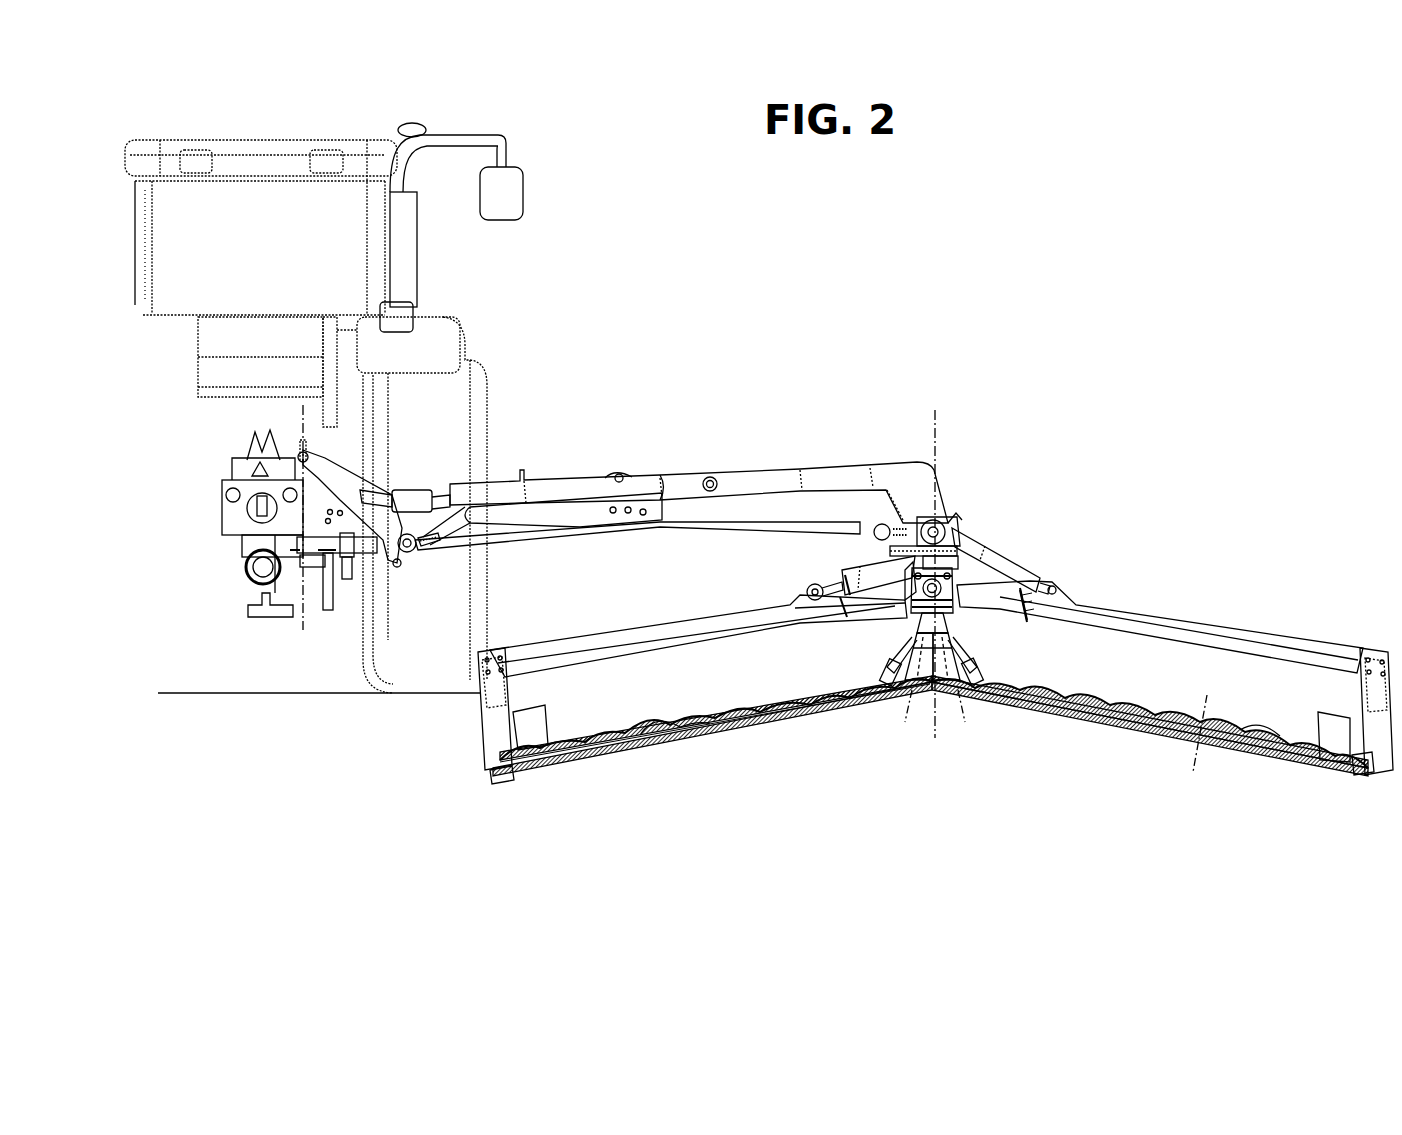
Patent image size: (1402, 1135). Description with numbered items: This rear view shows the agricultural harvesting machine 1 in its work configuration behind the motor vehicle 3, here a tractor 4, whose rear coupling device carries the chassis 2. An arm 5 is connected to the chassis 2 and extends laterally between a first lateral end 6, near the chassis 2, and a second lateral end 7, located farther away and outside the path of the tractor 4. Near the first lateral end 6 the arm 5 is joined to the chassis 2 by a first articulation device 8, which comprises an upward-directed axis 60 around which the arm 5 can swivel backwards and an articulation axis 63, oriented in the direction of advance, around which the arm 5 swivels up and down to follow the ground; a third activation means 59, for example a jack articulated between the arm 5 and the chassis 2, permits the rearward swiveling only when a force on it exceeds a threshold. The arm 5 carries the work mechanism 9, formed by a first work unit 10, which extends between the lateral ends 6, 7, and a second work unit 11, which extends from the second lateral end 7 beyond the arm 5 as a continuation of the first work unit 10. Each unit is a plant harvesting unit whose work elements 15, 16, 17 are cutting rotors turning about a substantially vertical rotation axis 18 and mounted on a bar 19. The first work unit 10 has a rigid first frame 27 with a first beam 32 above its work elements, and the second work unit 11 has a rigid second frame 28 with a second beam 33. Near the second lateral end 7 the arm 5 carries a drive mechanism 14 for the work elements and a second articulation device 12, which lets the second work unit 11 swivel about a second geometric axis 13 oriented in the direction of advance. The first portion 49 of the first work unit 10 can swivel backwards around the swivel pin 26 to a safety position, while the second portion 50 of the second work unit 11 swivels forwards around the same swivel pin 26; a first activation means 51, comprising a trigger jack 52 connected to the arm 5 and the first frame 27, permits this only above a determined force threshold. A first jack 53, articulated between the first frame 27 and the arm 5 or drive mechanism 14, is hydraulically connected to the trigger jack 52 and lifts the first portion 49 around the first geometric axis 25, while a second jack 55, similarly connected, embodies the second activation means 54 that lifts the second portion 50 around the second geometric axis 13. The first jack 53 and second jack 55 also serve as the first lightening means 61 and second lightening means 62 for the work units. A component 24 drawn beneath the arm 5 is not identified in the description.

The machine 1 is at (452, 836).
The chassis 2 is at (250, 518).
The motor vehicle 3 is at (333, 408).
The tractor 4 is at (466, 313).
The arm 5 is at (777, 482).
The first lateral end 6 is at (423, 548).
The second lateral end 7 is at (947, 518).
The first articulation device 8 is at (381, 560).
The work mechanism 9 is at (935, 745).
The first work unit 10 is at (705, 725).
The second work unit 11 is at (1162, 738).
The second articulation device 12 is at (958, 552).
The second geometric axis 13 is at (989, 605).
The drive mechanism 14 is at (905, 585).
The work element 15 is at (660, 722).
The work element 16 is at (968, 648).
The work element 17 is at (912, 664).
The rotation axis 18 is at (903, 712).
The bar 19 is at (642, 745).
The lower arm / linkage 24 is at (665, 518).
The first geometric axis 25 is at (945, 593).
The swivel pin 26 is at (937, 442).
The first frame 27 is at (698, 618).
The second frame 28 is at (1160, 611).
The first beam 32 is at (705, 637).
The second beam 33 is at (1248, 643).
The first portion 49 is at (705, 735).
The second portion 50 is at (1300, 760).
The first activation means 51 is at (868, 535).
The trigger jack 52 is at (858, 545).
The first jack 53 is at (846, 572).
The second activation means 54 is at (1075, 575).
The second jack 55 is at (1000, 562).
The third activation means 59 is at (323, 553).
The axis 60 is at (300, 428).
The first lightening means 61 is at (846, 568).
The second lightening means 62 is at (1030, 570).
The articulation axis 63 is at (407, 553).